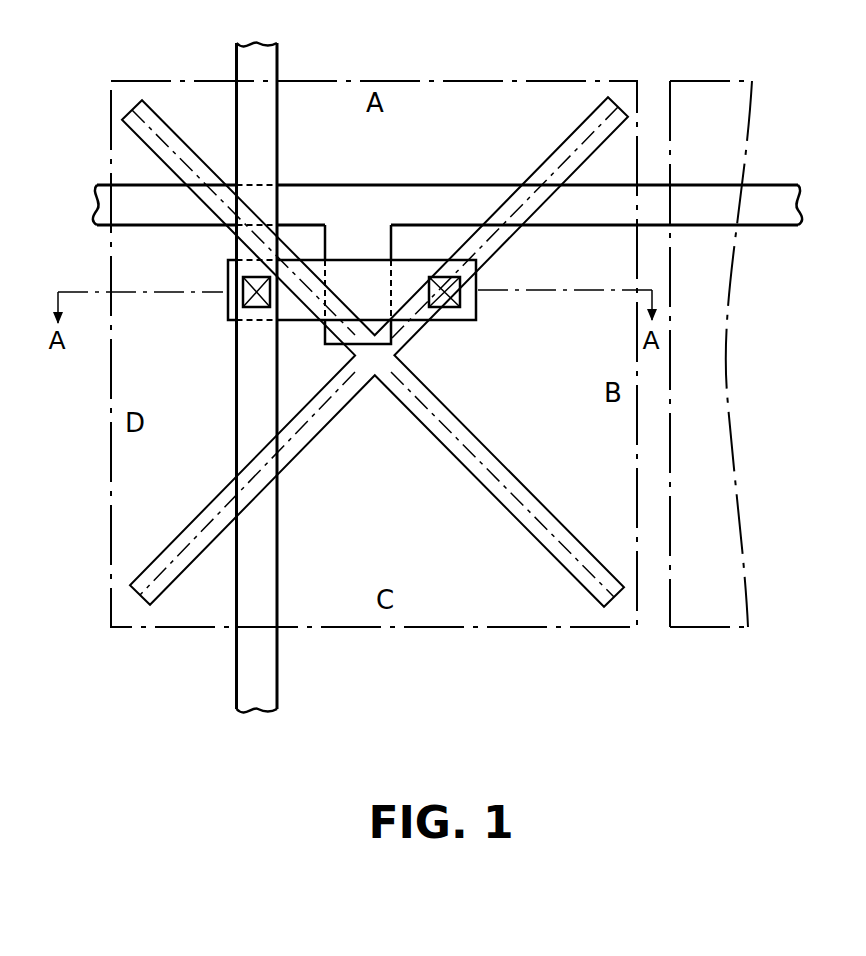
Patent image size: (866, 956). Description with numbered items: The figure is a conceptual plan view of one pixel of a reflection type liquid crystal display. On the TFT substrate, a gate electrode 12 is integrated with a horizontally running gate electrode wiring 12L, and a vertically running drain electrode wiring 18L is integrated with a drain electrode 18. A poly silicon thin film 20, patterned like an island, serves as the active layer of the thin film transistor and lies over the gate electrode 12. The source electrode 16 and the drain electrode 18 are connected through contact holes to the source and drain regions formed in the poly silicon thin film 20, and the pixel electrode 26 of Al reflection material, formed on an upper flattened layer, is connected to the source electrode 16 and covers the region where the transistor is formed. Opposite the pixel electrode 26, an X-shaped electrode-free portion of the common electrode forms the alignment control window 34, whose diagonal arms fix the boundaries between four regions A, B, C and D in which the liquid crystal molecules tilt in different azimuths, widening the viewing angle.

The gate electrode wiring 12L is at (768, 185).
The drain electrode wiring 18L is at (237, 682).
The gate electrode 12 is at (323, 343).
The source electrode 16 is at (461, 297).
The drain electrode 18 is at (256, 310).
The poly silicon thin film 20 is at (214, 314).
The pixel electrode 26 is at (637, 397).
The alignment control window 34 is at (403, 410).